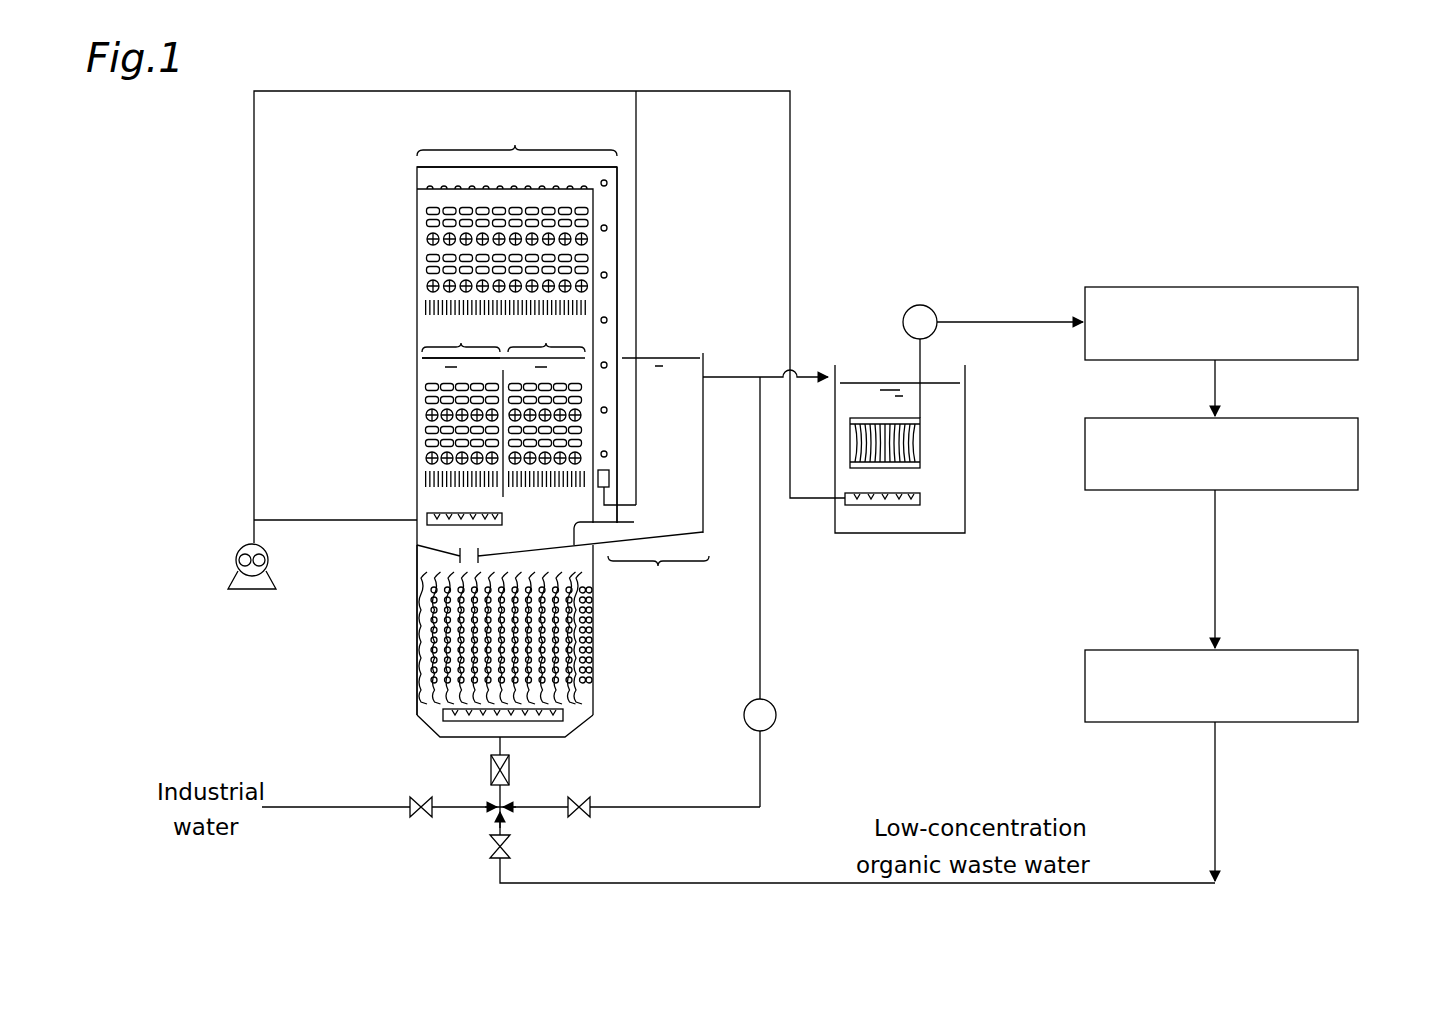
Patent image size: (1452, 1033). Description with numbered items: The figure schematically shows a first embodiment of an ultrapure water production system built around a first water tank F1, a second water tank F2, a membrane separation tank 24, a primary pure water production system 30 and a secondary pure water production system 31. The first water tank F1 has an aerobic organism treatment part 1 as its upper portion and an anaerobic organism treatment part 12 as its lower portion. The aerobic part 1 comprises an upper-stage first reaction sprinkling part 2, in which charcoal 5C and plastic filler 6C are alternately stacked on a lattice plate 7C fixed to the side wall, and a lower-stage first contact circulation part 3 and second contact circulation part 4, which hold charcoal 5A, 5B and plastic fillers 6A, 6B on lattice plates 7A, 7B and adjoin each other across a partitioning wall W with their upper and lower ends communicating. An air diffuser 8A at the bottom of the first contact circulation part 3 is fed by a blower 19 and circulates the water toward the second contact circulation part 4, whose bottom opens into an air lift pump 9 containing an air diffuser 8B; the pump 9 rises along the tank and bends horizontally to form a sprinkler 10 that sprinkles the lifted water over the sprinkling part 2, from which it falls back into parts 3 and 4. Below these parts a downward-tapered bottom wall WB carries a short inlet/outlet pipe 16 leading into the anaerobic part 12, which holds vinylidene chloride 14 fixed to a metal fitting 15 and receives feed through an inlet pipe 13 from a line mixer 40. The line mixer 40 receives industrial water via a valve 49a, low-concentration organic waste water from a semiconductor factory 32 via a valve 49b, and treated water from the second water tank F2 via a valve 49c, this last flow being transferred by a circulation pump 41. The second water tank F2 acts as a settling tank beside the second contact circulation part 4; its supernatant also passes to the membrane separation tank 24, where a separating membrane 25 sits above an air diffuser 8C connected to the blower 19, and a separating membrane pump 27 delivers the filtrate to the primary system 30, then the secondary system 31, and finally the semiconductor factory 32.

The aerobic organism treatment part 1 is at (350, 187).
The first reaction sprinkling part 2 is at (580, 178).
The first contact circulation part 3 is at (461, 334).
The second contact circulation part 4 is at (546, 334).
The charcoal 5A is at (426, 393).
The charcoal 5B is at (582, 387).
The charcoal 5C is at (585, 262).
The plastic fillers 6A is at (426, 415).
The plastic fillers 6B is at (582, 454).
The plastic filler 6C is at (590, 240).
The lattice plate 7A is at (426, 480).
The lattice plate 7B is at (527, 480).
The lattice plate 7C is at (588, 305).
The air diffuser 8A is at (486, 526).
The air diffuser 8B is at (610, 477).
The air diffuser 8C is at (883, 506).
The air lift pump 9 is at (617, 203).
The sprinkler 10 is at (417, 180).
The anaerobic organism treatment part 12 is at (611, 570).
The inlet pipe 13 is at (443, 723).
The vinylidene chloride 14 is at (430, 638).
The metal fitting 15 is at (424, 573).
The inlet/outlet pipe 16 is at (458, 551).
The blower 19 is at (250, 592).
The membrane separation tank 24 is at (970, 488).
The separating membrane 25 is at (925, 432).
The separating membrane pump 27 is at (920, 304).
The primary pure water production system 30 is at (1360, 325).
The secondary pure water production system 31 is at (1360, 455).
The semiconductor factory 32 is at (1360, 685).
The line mixer 40 is at (510, 769).
The circulation pump 41 is at (777, 712).
The valve 49a is at (416, 797).
The valve 49b is at (490, 847).
The valve 49c is at (580, 818).
The partitioning wall W is at (428, 371).
The bottom wall WB is at (622, 525).
The first water tank F1 is at (517, 136).
The second water tank F2 is at (658, 579).